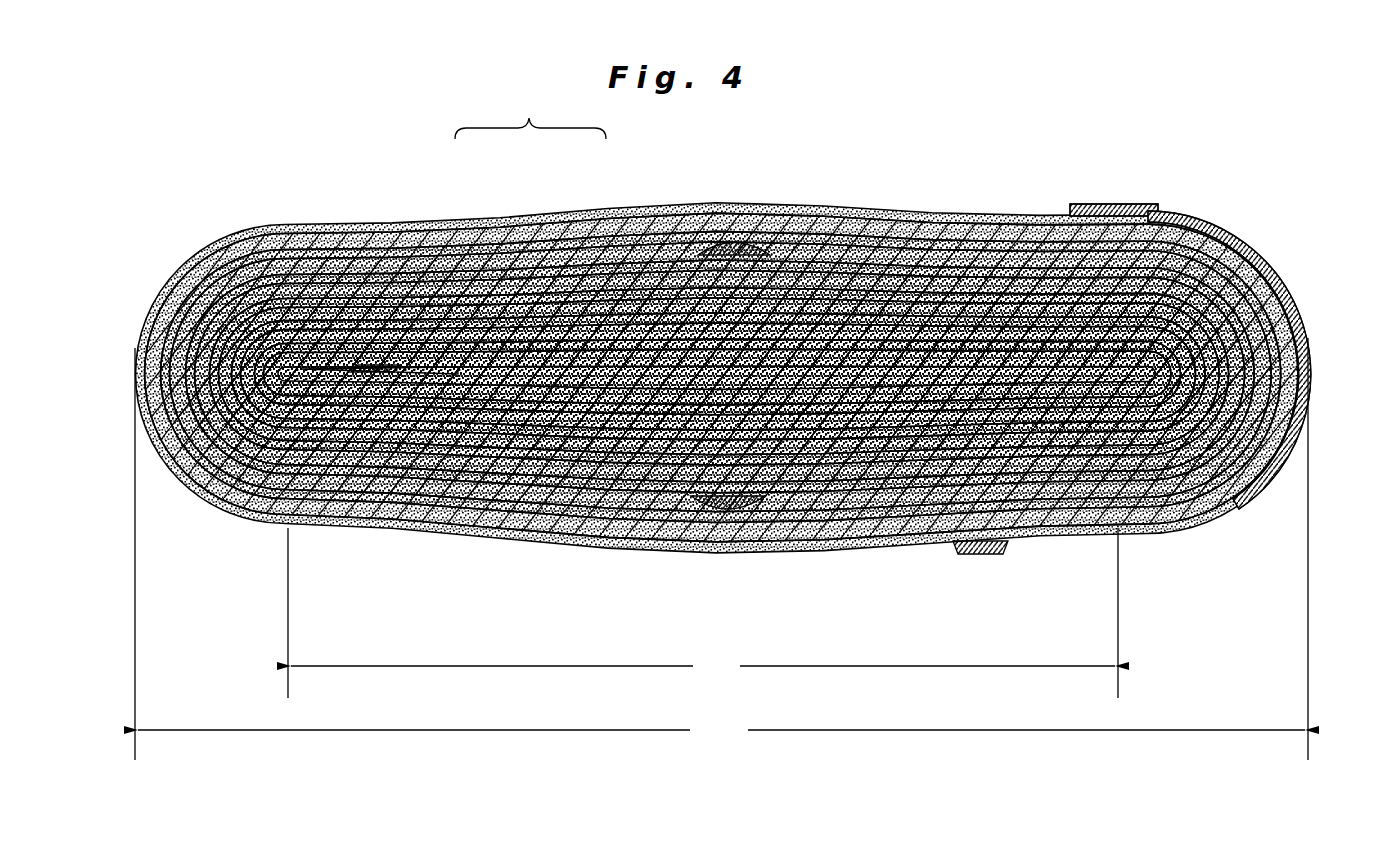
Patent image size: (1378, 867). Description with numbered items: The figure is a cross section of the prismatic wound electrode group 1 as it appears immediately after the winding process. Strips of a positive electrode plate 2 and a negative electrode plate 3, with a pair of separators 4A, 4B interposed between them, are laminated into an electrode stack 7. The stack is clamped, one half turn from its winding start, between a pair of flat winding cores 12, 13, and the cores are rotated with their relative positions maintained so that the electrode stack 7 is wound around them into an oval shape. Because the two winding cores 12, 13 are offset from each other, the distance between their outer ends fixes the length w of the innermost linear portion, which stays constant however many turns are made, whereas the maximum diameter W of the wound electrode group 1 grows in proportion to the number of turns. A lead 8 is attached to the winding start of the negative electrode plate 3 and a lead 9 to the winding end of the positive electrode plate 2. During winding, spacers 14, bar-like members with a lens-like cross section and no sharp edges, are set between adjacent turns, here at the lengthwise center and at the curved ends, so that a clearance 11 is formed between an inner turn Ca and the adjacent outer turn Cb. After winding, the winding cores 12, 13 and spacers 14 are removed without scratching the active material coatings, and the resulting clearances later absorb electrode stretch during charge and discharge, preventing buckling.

The prismatic wound electrode group 1 is at (836, 190).
The positive electrode plate 2 is at (450, 213).
The negative electrode plate 3 is at (537, 213).
The separator 4A is at (563, 227).
The separator 4B is at (498, 216).
The electrode stack 7 is at (530, 113).
The lead 8 is at (360, 356).
The lead 9 is at (975, 546).
The clearance 11 is at (670, 233).
The winding core 12 is at (563, 390).
The winding core 13 is at (655, 350).
The spacer 14 is at (718, 238).
The inner turn Ca is at (790, 253).
The outer turn Cb is at (760, 227).
The length of innermost linear portion w is at (703, 613).
The maximum diameter W is at (721, 549).